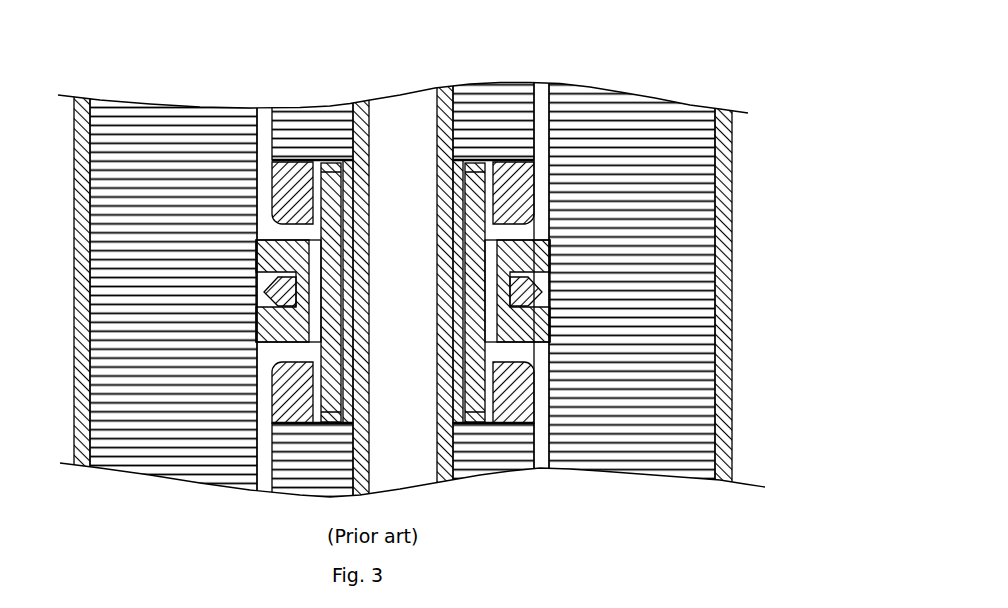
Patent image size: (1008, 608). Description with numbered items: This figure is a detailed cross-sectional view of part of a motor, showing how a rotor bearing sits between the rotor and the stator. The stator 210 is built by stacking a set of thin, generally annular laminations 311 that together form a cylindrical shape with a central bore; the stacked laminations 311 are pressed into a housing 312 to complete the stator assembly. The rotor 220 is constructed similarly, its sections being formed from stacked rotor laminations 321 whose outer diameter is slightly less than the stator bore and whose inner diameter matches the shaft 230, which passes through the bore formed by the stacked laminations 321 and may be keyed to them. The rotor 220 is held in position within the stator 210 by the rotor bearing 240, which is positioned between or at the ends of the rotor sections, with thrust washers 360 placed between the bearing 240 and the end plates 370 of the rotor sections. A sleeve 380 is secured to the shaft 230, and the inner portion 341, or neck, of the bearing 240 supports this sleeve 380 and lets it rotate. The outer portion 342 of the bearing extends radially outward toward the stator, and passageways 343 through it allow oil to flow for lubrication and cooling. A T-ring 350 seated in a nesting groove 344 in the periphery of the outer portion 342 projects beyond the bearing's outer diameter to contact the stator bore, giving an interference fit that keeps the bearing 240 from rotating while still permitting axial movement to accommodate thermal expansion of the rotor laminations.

The stator 210 is at (690, 90).
The rotor 220 is at (500, 482).
The shaft 230 is at (440, 88).
The rotor bearing 240 is at (560, 251).
The stator lamination 311 is at (711, 371).
The housing 312 is at (733, 207).
The rotor lamination 321 is at (538, 466).
The inner portion 341 is at (458, 240).
The outer portion 342 is at (506, 345).
The passageway 343 is at (497, 306).
The nesting groove 344 is at (552, 299).
The T-ring 350 is at (550, 279).
The thrust washer 360 is at (458, 163).
The end plate 370 is at (438, 156).
The sleeve 380 is at (444, 202).